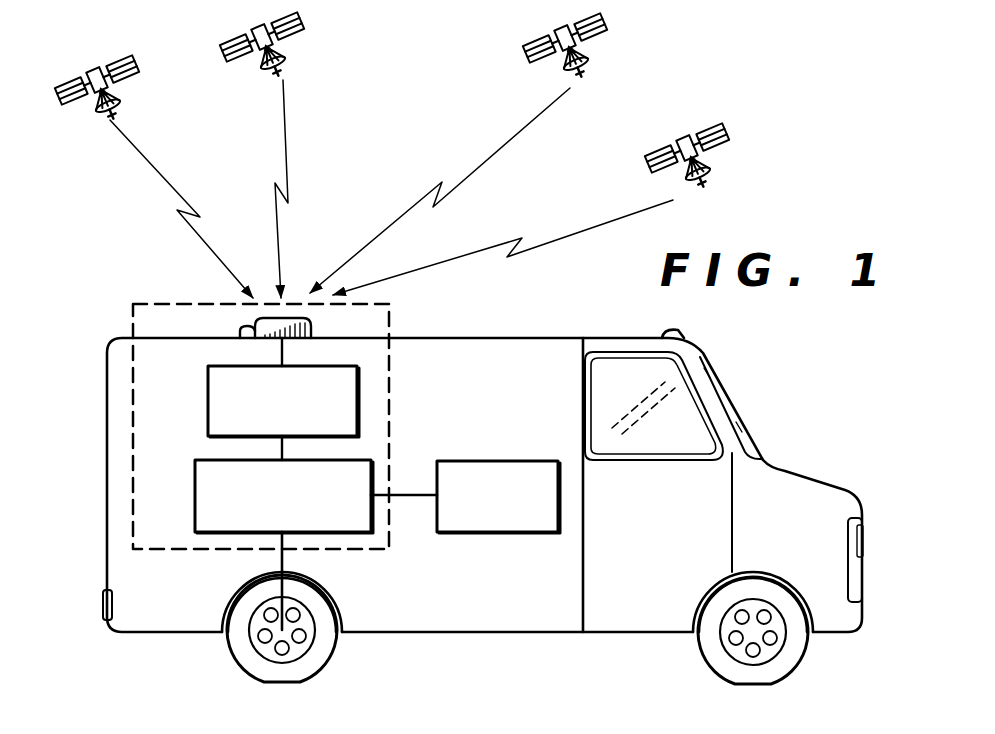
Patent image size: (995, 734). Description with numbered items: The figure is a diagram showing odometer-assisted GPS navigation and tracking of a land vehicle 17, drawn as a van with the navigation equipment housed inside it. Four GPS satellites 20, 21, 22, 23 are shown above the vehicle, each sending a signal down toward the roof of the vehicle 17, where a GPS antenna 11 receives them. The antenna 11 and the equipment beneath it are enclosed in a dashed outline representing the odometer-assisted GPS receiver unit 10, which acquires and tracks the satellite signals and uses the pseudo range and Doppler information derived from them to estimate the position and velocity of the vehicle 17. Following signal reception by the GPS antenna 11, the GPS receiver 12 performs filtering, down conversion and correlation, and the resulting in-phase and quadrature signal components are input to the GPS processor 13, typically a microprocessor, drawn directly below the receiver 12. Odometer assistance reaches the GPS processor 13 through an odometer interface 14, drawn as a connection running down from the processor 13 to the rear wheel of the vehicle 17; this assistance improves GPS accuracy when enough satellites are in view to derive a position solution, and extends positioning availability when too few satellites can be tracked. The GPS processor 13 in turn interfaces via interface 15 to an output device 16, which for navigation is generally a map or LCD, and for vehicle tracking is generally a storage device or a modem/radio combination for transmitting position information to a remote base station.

The GPS receiver unit 10 is at (390, 398).
The GPS antenna 11 is at (257, 322).
The GPS receiver 12 is at (209, 404).
The GPS processor 13 is at (197, 496).
The odometer interface 14 is at (276, 558).
The interface 15 is at (412, 500).
The output device 16 is at (494, 534).
The land vehicle 17 is at (781, 527).
The GPS satellite 20 is at (127, 80).
The GPS satellite 21 is at (294, 39).
The GPS satellite 22 is at (597, 39).
The GPS satellite 23 is at (718, 151).